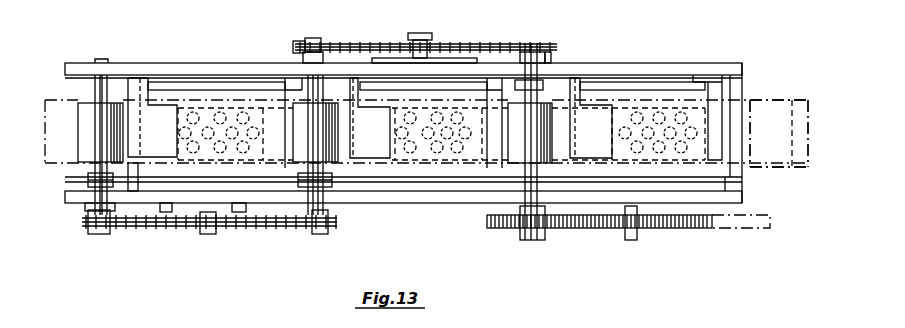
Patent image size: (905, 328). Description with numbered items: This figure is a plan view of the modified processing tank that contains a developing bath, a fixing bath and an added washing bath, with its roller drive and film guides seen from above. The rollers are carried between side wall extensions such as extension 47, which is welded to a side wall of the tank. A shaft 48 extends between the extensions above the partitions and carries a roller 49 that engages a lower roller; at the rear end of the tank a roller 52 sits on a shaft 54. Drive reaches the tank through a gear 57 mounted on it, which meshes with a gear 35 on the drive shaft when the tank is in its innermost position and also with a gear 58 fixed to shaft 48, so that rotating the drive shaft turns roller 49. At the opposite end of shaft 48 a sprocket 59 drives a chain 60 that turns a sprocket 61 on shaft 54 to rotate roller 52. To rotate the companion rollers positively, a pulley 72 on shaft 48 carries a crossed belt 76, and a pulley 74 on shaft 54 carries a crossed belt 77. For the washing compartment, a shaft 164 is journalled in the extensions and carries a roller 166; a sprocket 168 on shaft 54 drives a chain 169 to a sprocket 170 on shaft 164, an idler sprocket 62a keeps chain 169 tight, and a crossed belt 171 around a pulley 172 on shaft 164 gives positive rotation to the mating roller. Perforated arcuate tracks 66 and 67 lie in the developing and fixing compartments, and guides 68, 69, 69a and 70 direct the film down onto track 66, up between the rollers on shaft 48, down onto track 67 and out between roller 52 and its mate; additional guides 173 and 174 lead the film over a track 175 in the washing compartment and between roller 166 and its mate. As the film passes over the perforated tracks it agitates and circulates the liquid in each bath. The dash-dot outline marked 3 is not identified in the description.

The bale 3 is at (795, 100).
The gear 35 is at (735, 228).
The side wall extension 47 is at (440, 192).
The shaft 48 is at (531, 48).
The roller 49 is at (540, 140).
The roller 52 is at (333, 150).
The shaft 54 is at (315, 40).
The gear 57 is at (668, 228).
The gear 58 is at (500, 228).
The sprocket 59 is at (548, 55).
The chain 60 is at (445, 47).
The sprocket 61 is at (295, 45).
The idler sprocket 62a is at (206, 234).
The perforated arcuate-shaped track 66 is at (667, 110).
The perforated arcuate-shaped track 67 is at (426, 160).
The guide 68 is at (720, 120).
The guide 69 is at (586, 110).
The guide 69a is at (488, 160).
The guide 70 is at (315, 132).
The pulley 72 is at (530, 133).
The pulley 74 is at (312, 145).
The belt 76 is at (535, 85).
The crossed belt 77 is at (330, 180).
The shaft 164 is at (101, 59).
The roller 166 is at (78, 118).
The sprocket 168 is at (337, 224).
The chain 169 is at (260, 228).
The sprocket 170 is at (84, 228).
The belt 171 is at (88, 178).
The pulley 172 is at (85, 207).
The guide 173 is at (268, 112).
The guide 174 is at (157, 112).
The track 175 is at (193, 110).